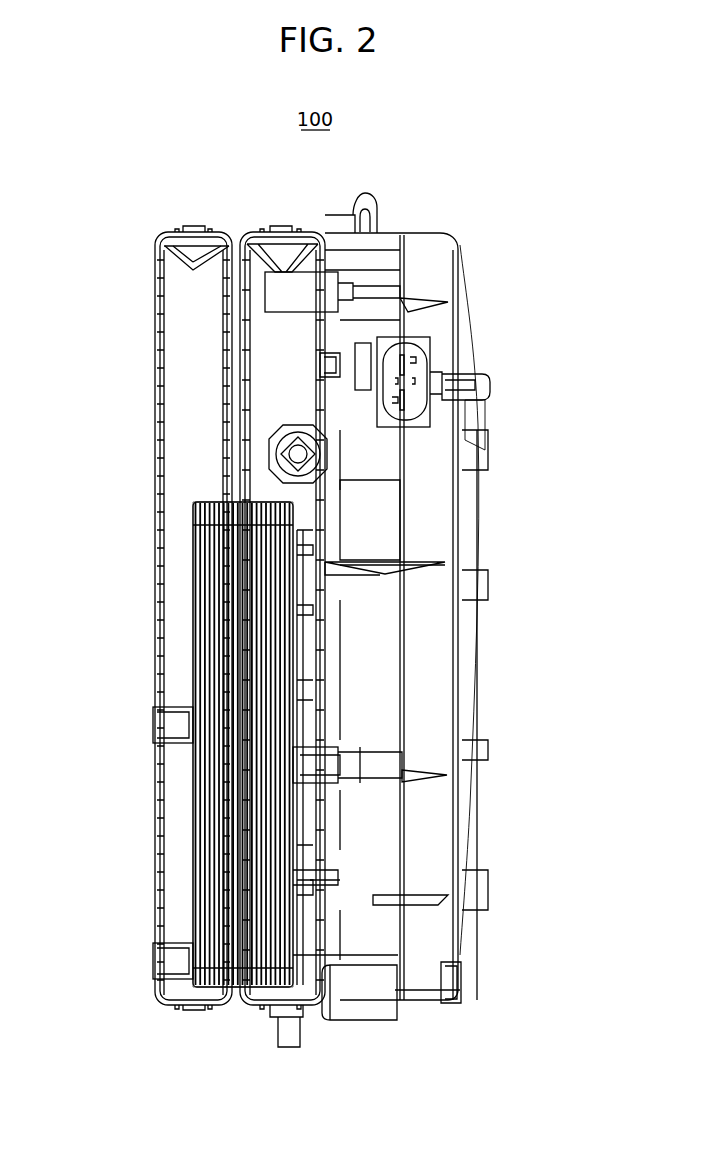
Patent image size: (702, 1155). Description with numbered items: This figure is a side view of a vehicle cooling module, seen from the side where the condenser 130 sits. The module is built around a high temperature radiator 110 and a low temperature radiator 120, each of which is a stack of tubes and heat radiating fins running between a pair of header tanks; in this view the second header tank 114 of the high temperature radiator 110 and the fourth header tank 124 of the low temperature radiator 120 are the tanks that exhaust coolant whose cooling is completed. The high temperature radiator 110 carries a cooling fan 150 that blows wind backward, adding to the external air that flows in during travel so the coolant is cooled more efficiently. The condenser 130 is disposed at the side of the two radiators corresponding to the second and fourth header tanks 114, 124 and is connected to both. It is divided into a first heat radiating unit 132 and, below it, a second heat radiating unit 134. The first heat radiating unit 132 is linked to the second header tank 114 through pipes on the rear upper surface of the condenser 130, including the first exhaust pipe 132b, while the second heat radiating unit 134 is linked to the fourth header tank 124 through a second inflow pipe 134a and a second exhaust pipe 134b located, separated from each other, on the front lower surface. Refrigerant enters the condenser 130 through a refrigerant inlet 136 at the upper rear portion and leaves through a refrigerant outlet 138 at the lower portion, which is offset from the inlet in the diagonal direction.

The high temperature radiator 110 is at (297, 221).
The second header tank 114 is at (268, 248).
The low temperature radiator 120 is at (171, 221).
The fourth header tank 124 is at (190, 307).
The condenser 130 is at (180, 859).
The first heat radiating unit 132 is at (184, 501).
The first exhaust pipe 132b is at (310, 672).
The second heat radiating unit 134 is at (310, 845).
The second inflow pipe 134a is at (153, 962).
The second exhaust pipe 134b is at (153, 725).
The refrigerant inlet 136 is at (310, 538).
The refrigerant outlet 138 is at (310, 955).
The cooling fan 150 is at (440, 328).